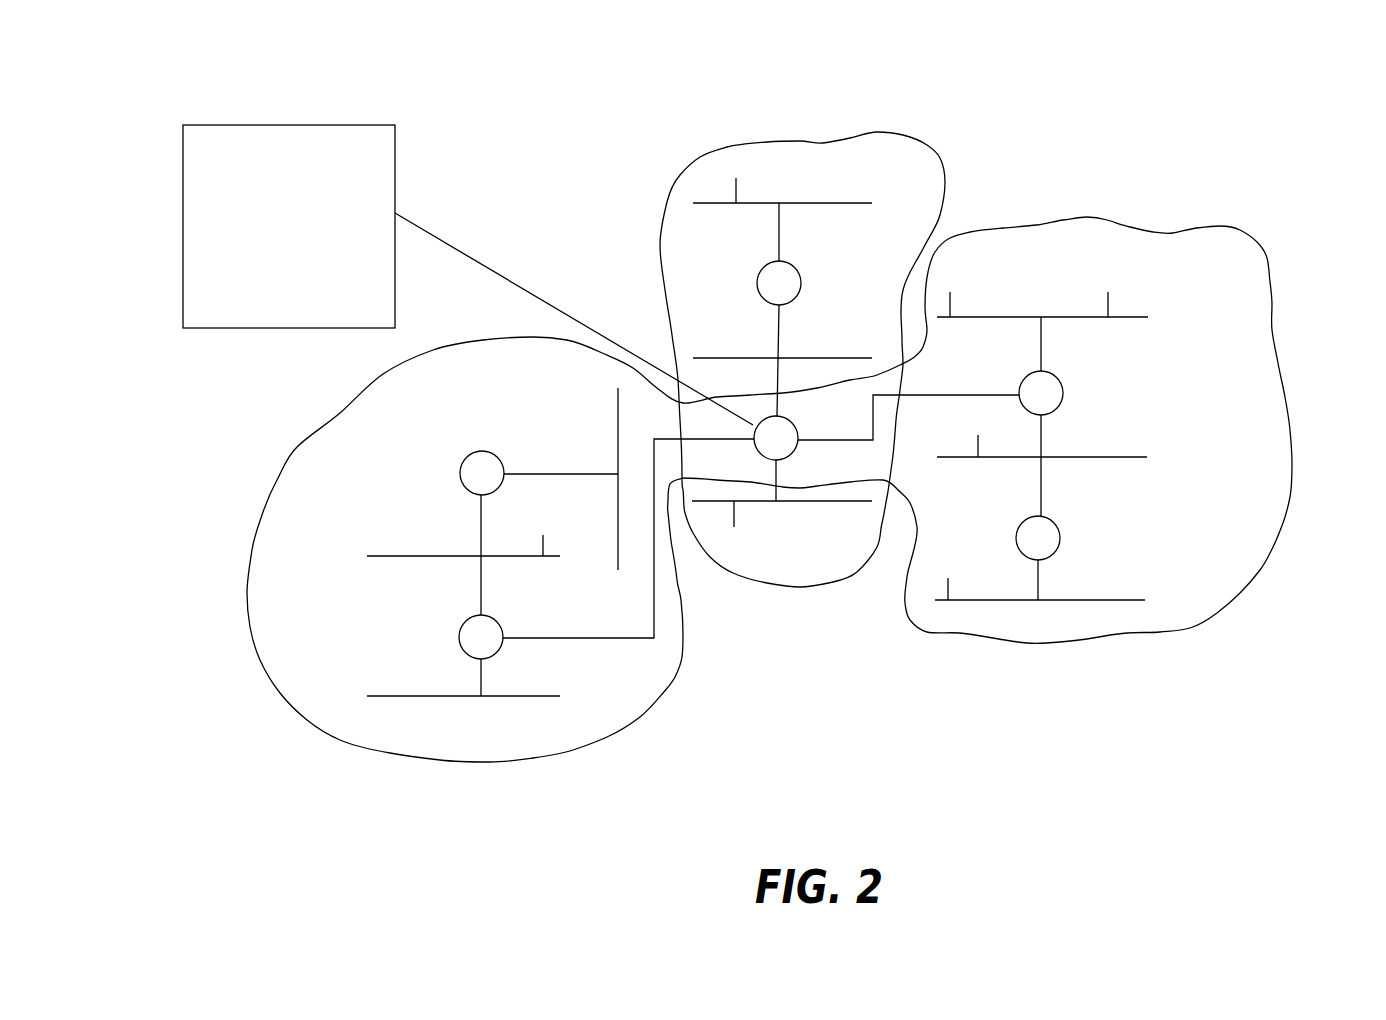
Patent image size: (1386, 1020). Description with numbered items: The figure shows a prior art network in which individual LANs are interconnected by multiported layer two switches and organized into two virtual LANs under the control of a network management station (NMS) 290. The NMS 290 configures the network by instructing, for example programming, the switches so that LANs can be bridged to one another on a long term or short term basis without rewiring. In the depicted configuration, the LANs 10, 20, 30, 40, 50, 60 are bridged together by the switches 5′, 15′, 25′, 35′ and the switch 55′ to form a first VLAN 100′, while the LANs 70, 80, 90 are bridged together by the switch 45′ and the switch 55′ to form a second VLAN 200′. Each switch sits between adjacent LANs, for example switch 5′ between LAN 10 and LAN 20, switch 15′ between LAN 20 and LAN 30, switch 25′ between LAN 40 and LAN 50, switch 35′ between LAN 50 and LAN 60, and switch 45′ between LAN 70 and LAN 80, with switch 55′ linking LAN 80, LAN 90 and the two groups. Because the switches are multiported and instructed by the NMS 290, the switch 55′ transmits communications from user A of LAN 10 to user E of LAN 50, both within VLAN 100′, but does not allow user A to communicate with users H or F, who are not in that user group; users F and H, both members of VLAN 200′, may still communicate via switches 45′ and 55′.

The network management station 290 is at (369, 125).
The VLAN 200′ is at (937, 152).
The VLAN 100′ is at (1271, 293).
The LAN 70 is at (862, 203).
The layer 2 switch 45′ is at (801, 288).
The LAN 80 is at (858, 358).
The layer 2 switch 55′ is at (794, 452).
The LAN 90 is at (835, 501).
The LAN 40 is at (619, 420).
The layer 2 switch 25′ is at (467, 457).
The LAN 50 is at (378, 556).
The layer 2 switch 35′ is at (496, 621).
The LAN 60 is at (368, 696).
The LAN 10 is at (1138, 317).
The layer 2 switch 5′ is at (1060, 402).
The LAN 20 is at (1137, 457).
The layer 2 switch 15′ is at (1058, 543).
The LAN 30 is at (1123, 600).